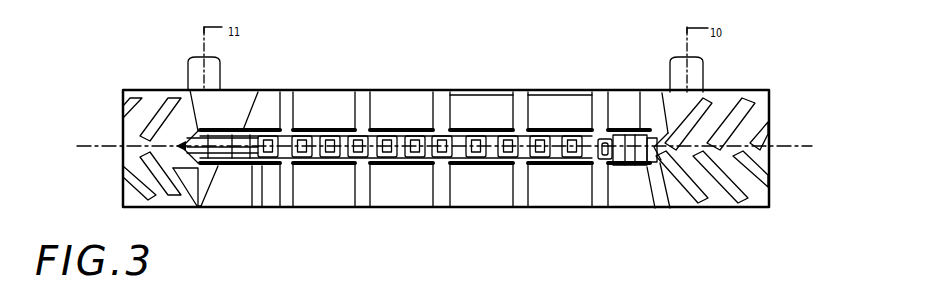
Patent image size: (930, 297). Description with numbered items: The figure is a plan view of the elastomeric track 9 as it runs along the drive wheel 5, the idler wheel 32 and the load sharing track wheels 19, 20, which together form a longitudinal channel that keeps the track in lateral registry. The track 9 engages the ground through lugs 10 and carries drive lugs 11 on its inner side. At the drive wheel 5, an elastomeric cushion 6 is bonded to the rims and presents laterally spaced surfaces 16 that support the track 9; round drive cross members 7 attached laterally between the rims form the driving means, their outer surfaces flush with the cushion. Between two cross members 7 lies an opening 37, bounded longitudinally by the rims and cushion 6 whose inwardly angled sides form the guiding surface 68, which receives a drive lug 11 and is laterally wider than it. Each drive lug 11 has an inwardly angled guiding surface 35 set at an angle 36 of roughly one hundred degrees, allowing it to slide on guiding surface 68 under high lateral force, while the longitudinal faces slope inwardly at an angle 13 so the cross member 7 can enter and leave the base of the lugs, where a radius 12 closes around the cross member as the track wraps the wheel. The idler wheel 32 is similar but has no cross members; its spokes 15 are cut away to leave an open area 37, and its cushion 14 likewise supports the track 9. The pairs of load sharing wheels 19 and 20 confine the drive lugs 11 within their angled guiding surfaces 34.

The drive wheel 5 is at (742, 88).
The idler wheel 32 is at (140, 70).
The laterally spaced surfaces 16 is at (232, 103).
The spokes 15 is at (211, 204).
The elastomeric cushion 14 is at (243, 193).
The guiding surface 68 is at (240, 128).
The radius 12 is at (350, 60).
The load sharing track wheel 19 is at (380, 105).
The angle 13 is at (527, 147).
The elastomeric track 9 is at (597, 200).
The load sharing track wheel 20 is at (462, 113).
The guiding surface 35 is at (422, 131).
The drive lug 11 is at (443, 160).
The angled guiding surfaces 34 is at (400, 140).
The angle 36 is at (583, 168).
The opening 37 is at (628, 109).
The drive cross member 7 is at (640, 167).
The elastomeric cushion 6 is at (683, 197).
The lugs 10 is at (742, 108).